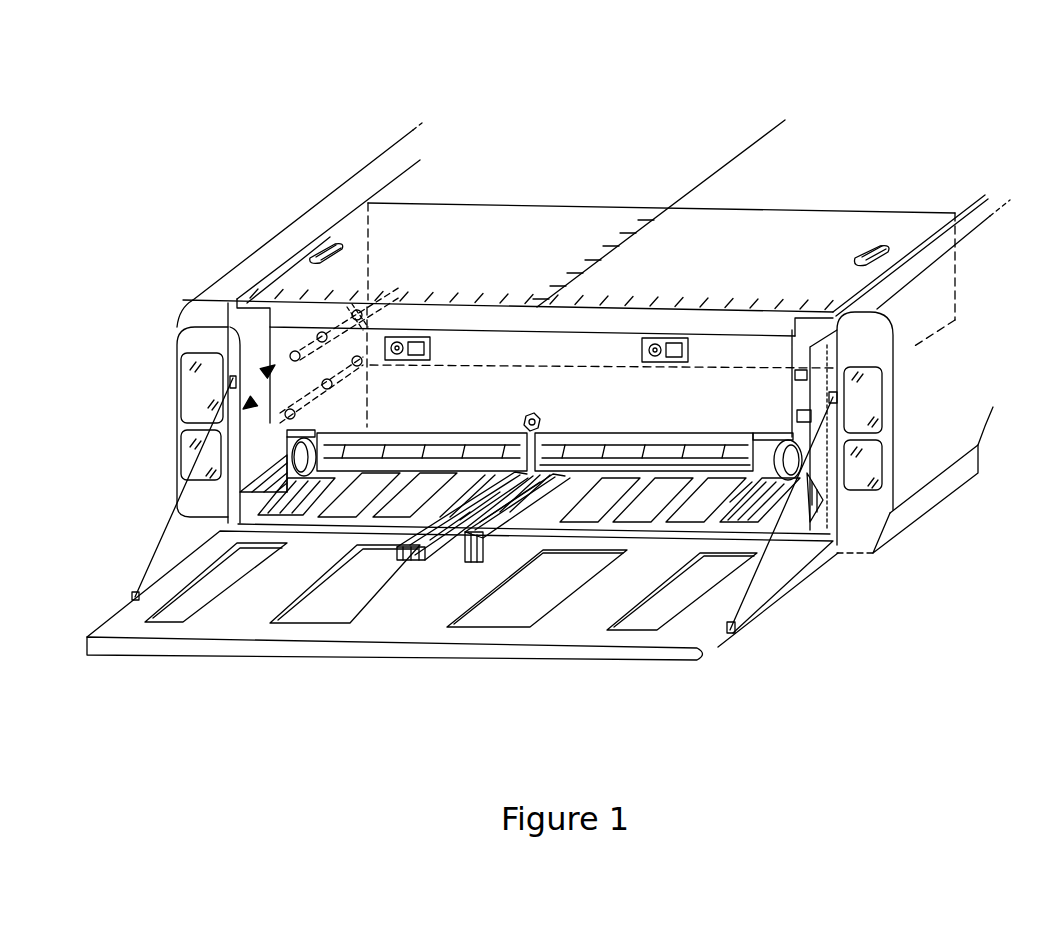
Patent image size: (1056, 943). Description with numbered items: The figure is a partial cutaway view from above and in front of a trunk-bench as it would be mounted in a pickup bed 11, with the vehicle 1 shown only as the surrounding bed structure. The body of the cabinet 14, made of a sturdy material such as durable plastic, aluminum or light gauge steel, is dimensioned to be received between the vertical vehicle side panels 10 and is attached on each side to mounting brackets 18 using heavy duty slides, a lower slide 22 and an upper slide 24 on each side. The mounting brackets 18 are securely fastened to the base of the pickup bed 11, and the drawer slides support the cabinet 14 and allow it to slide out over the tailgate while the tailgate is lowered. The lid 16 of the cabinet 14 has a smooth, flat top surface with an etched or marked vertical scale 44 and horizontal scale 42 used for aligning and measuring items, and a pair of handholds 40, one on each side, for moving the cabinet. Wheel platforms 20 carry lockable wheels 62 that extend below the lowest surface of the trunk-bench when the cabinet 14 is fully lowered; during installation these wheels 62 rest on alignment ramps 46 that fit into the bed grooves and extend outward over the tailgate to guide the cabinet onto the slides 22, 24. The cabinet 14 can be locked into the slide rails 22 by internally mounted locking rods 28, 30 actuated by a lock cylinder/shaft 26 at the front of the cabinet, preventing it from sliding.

The tailgate 1 is at (433, 610).
The vehicle side panels 10 is at (287, 245).
The pickup bed 11 is at (320, 515).
The cabinet 14 is at (590, 405).
The lid 16 is at (455, 242).
The mounting brackets 18 is at (245, 478).
The wheel platforms 20 is at (238, 418).
The lower slides 22 is at (288, 400).
The upper slides 24 is at (300, 350).
The lock cylinder/shaft 26 is at (525, 418).
The locking rod 28 is at (440, 425).
The locking rod 30 is at (725, 425).
The handholds 40 is at (327, 245).
The horizontal scale 42 is at (745, 300).
The vertical scale 44 is at (669, 200).
The alignment ramps 46 is at (228, 517).
The lockable wheels 62 is at (786, 440).